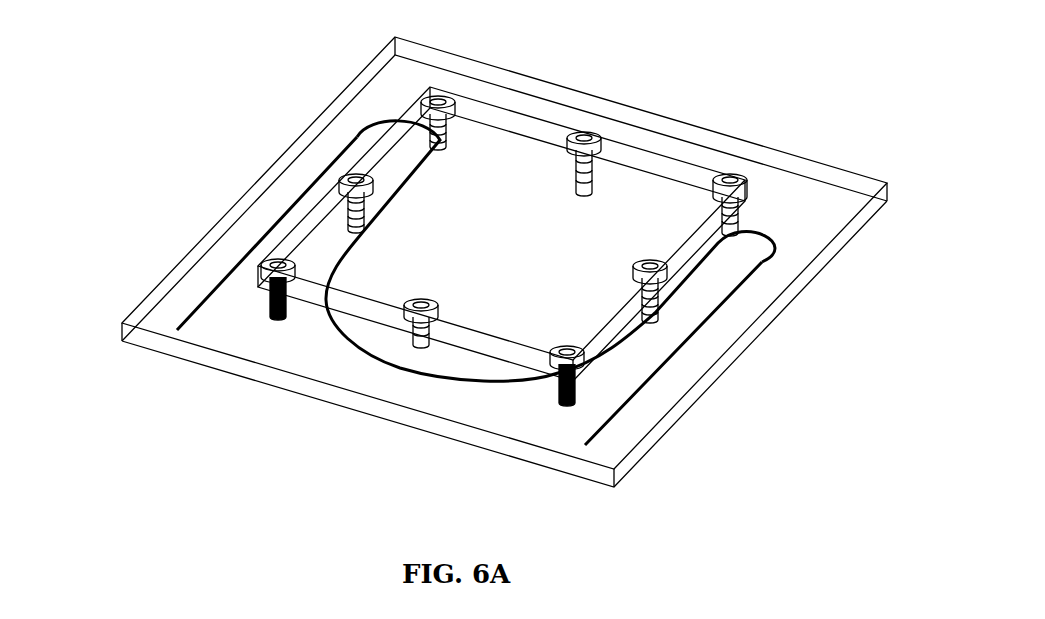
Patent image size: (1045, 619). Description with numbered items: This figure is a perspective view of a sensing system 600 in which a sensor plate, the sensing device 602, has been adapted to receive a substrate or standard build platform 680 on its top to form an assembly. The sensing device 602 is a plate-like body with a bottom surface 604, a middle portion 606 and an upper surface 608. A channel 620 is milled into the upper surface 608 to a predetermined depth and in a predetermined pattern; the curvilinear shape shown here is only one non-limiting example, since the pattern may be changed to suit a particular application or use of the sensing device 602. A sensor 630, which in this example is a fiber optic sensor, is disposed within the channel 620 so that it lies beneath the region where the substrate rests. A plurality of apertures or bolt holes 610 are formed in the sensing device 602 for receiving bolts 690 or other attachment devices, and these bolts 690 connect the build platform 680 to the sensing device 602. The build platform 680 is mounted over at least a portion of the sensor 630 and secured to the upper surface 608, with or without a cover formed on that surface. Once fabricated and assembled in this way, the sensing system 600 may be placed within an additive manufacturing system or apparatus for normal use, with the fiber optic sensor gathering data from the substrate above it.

The sensing system 600 is at (244, 78).
The sensing device 602 is at (158, 270).
The bottom surface 604 is at (205, 370).
The middle portion 606 is at (363, 403).
The upper surface 608 is at (462, 402).
The apertures or bolt holes 610 is at (724, 203).
The channel 620 is at (185, 323).
The sensor 630 is at (368, 120).
The build platform 680 is at (522, 252).
The bolts 690 is at (257, 255).